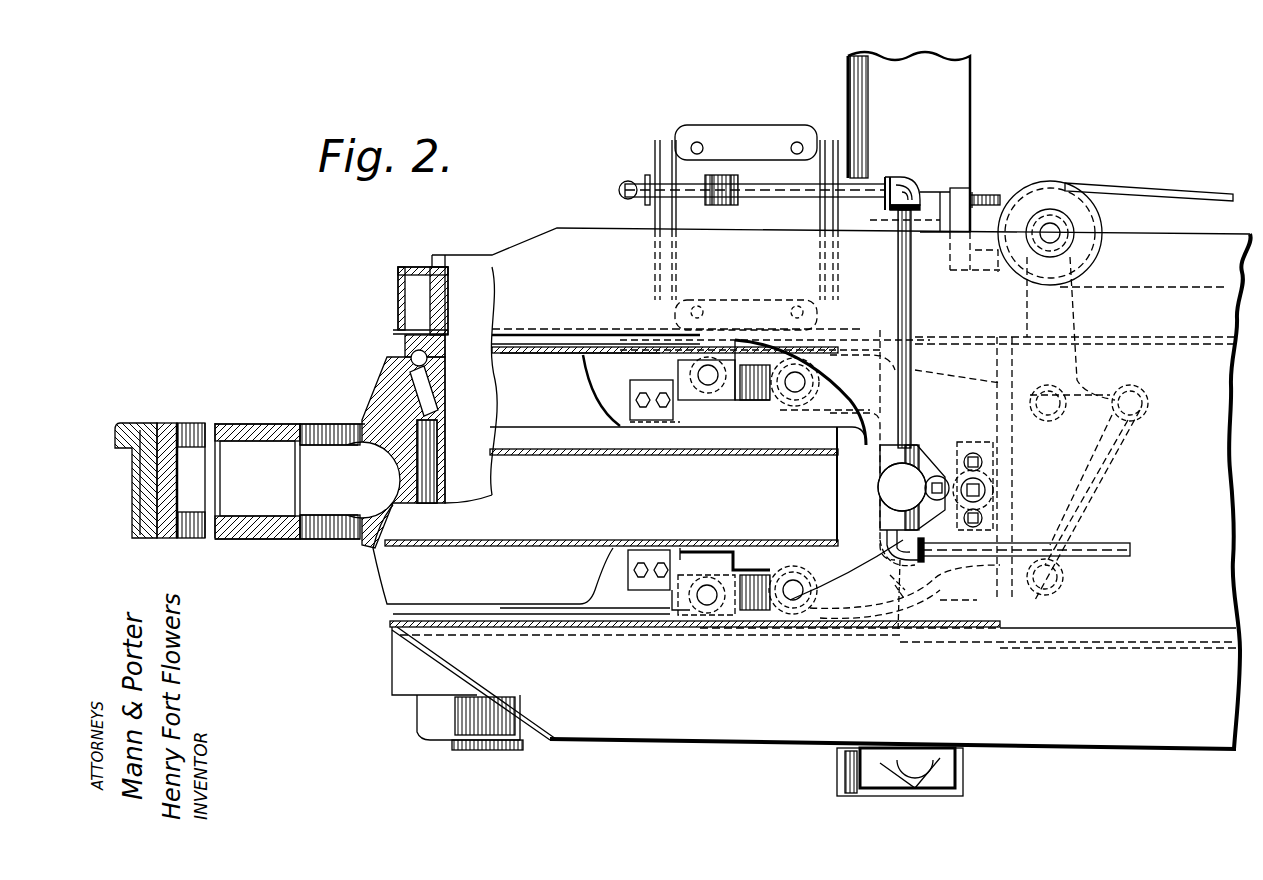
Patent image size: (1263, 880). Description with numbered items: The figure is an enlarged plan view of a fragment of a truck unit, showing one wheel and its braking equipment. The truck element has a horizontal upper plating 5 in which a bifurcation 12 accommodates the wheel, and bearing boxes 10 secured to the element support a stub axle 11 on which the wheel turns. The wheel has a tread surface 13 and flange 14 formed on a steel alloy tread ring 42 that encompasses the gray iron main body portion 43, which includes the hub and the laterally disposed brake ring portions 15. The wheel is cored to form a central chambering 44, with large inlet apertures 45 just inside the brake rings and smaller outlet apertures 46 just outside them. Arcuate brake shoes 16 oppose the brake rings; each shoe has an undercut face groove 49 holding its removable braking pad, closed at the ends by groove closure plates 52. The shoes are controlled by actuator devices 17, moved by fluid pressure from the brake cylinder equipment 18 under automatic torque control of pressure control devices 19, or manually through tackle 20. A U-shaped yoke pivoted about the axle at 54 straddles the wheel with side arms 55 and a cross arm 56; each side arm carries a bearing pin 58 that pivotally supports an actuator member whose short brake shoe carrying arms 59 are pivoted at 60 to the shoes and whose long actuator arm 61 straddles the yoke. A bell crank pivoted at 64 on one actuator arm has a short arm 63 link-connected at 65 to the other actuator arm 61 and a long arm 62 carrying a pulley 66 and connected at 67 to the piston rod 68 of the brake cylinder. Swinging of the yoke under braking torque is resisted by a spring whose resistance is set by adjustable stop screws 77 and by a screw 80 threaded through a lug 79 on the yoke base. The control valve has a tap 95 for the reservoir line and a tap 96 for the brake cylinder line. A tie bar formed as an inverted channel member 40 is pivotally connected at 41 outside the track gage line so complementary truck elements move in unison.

The upper plating 5 is at (1132, 642).
The bearing boxes 10 is at (398, 280).
The stub axle 11 is at (468, 257).
The bifurcations 12 is at (795, 360).
The tread surface 13 is at (135, 472).
The flange 14 is at (137, 428).
The brake ring portions 15 is at (248, 423).
The brake shoes 16 is at (722, 410).
The actuator devices 17 is at (743, 620).
The brake cylinder equipments 18 is at (733, 160).
The pressure control devices 19 is at (952, 447).
The tackle 20 is at (1182, 190).
The inverted channel member 40 is at (825, 770).
The pivotal connection 41 is at (908, 781).
The tread ring 42 is at (145, 440).
The main body portion 43 is at (385, 522).
The central chambering 44 is at (372, 477).
The inlet apertures 45 is at (325, 432).
The outlet apertures 46 is at (200, 423).
The undercut face groove 49 is at (257, 478).
The groove closure plates 52 is at (645, 418).
The pivotal mounting 54 is at (386, 338).
The side arms 55 is at (605, 345).
The cross arm 56 is at (898, 635).
The bearing pin 58 is at (806, 390).
The brake shoe carrying arms 59 is at (782, 405).
The pivotal securement 60 is at (710, 373).
The actuator arm portion 61 is at (921, 480).
The long arm 62 is at (1078, 305).
The short arm 63 is at (1112, 395).
The lever pivot 64 is at (1077, 505).
The link connection 65 is at (1118, 482).
The pulley 66 is at (1062, 205).
The connection 67 is at (983, 200).
The piston rod 68 is at (923, 222).
The screws 77 is at (985, 462).
The lug 79 is at (990, 518).
The screw 80 is at (990, 490).
The tap 95 is at (884, 565).
The tap 96 is at (913, 487).